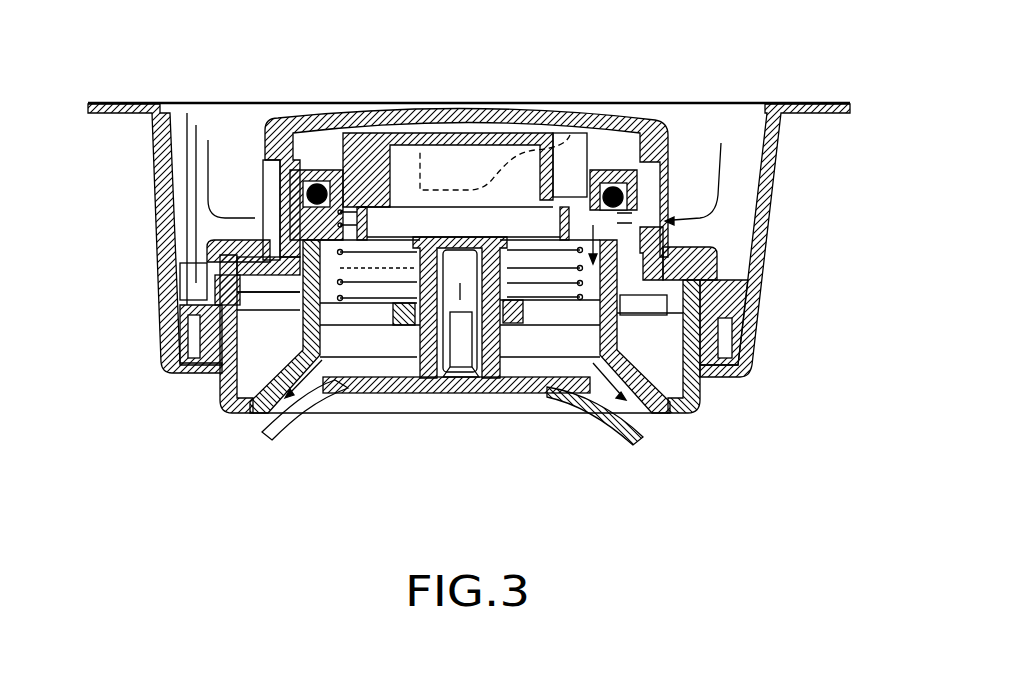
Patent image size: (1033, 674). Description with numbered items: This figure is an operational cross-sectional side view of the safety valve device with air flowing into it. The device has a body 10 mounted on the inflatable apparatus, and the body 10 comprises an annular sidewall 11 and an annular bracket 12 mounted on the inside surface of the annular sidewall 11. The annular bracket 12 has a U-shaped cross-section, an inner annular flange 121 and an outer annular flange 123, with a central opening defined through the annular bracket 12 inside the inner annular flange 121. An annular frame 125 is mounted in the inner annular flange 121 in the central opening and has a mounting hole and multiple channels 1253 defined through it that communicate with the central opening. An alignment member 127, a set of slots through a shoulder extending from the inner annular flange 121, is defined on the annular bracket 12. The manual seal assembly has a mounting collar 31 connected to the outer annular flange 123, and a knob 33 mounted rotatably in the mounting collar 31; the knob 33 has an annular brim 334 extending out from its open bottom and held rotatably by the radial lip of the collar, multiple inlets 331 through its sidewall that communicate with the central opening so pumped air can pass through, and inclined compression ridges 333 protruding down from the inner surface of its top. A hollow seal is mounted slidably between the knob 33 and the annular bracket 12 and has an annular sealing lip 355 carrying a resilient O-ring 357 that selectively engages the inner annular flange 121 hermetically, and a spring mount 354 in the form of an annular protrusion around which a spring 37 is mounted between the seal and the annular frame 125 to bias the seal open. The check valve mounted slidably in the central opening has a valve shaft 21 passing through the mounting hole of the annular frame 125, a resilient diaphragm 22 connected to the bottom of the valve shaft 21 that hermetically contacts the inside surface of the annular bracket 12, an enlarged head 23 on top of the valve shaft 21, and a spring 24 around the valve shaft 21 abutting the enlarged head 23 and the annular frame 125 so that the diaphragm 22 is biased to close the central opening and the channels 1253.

The body 10 is at (765, 335).
The annular sidewall 11 is at (772, 205).
The annular bracket 12 is at (686, 414).
The inner annular flange 121 is at (708, 256).
The outer annular flange 123 is at (702, 283).
The annular frame 125 is at (688, 400).
The channels 1253 is at (378, 320).
The alignment member 127 is at (340, 283).
The valve shaft 21 is at (523, 318).
The diaphragm 22 is at (628, 442).
The enlarged head 23 is at (447, 240).
The spring 24 is at (413, 263).
The mounting collar 31 is at (207, 246).
The knob 33 is at (290, 118).
The inlets 331 is at (262, 168).
The inclined compression ridges 333 is at (570, 135).
The annular brim 334 is at (215, 272).
The spring mount 354 is at (575, 212).
The annular sealing lip 355 is at (673, 200).
The resilient O-ring 357 is at (597, 168).
The spring 37 is at (318, 296).